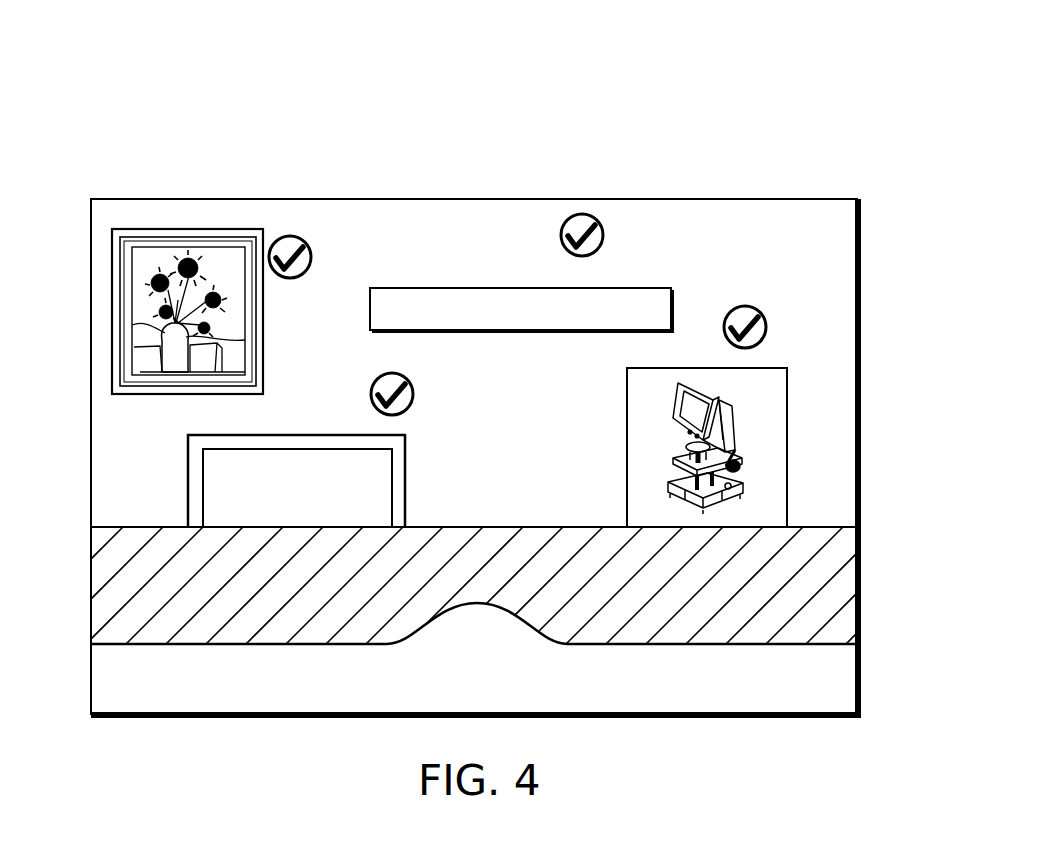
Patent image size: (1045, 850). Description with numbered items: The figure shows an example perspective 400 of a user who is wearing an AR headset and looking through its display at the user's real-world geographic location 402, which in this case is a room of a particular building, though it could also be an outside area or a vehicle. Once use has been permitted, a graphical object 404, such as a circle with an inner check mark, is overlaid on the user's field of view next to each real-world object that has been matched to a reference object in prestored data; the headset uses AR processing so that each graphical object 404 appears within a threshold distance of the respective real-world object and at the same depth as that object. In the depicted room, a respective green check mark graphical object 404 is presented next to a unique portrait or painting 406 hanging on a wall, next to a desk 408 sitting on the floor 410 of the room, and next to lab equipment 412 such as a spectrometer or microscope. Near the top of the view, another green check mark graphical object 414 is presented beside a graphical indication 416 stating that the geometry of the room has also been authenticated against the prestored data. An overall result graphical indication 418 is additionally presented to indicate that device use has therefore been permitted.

The example perspective 400 is at (119, 64).
The real-world geographic location 402 is at (858, 285).
The graphical object 404 is at (313, 260).
The portrait or painting 406 is at (187, 228).
The desk 408 is at (188, 481).
The floor 410 is at (848, 586).
The lab equipment 412 is at (627, 446).
The green check mark graphical object 414 is at (560, 234).
The graphical indication 416 is at (722, 212).
The overall result graphical indication 418 is at (369, 307).